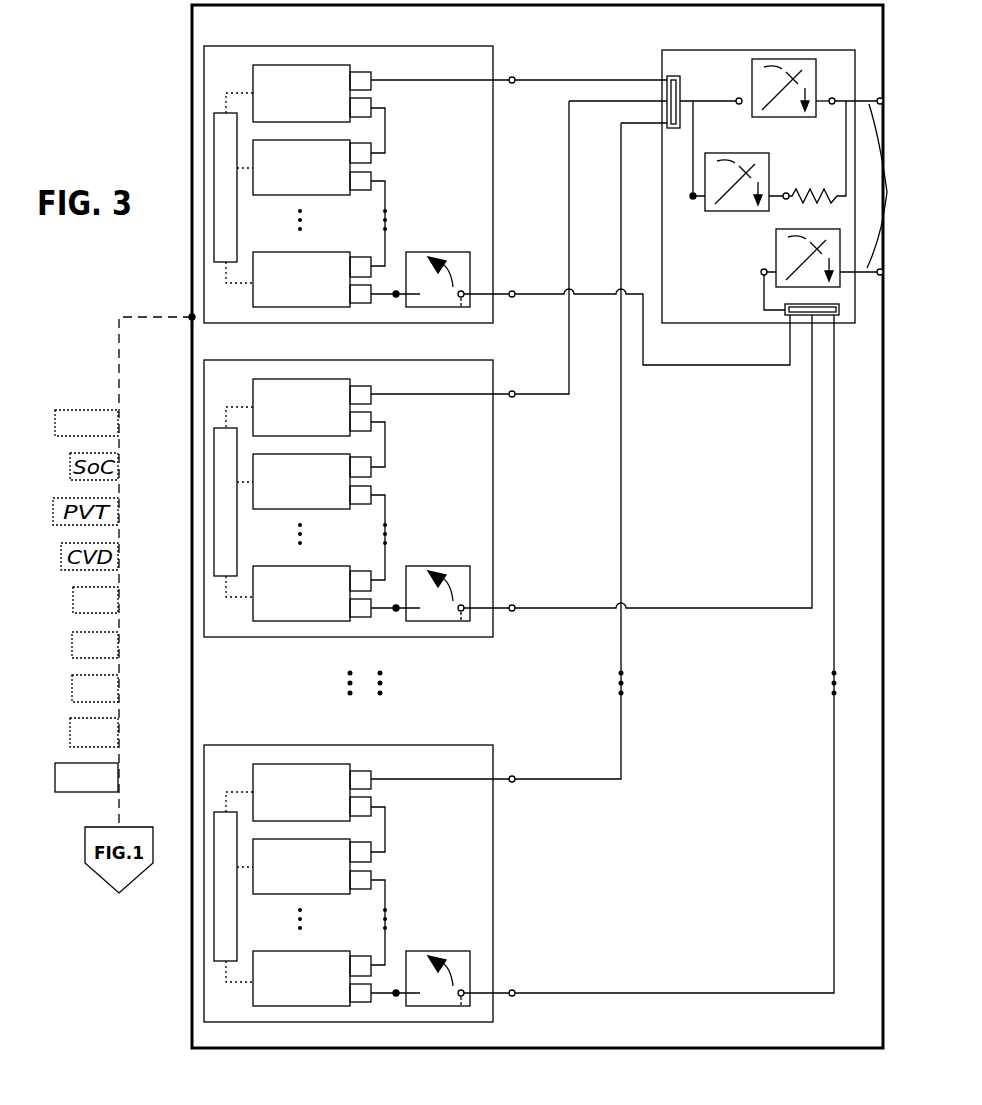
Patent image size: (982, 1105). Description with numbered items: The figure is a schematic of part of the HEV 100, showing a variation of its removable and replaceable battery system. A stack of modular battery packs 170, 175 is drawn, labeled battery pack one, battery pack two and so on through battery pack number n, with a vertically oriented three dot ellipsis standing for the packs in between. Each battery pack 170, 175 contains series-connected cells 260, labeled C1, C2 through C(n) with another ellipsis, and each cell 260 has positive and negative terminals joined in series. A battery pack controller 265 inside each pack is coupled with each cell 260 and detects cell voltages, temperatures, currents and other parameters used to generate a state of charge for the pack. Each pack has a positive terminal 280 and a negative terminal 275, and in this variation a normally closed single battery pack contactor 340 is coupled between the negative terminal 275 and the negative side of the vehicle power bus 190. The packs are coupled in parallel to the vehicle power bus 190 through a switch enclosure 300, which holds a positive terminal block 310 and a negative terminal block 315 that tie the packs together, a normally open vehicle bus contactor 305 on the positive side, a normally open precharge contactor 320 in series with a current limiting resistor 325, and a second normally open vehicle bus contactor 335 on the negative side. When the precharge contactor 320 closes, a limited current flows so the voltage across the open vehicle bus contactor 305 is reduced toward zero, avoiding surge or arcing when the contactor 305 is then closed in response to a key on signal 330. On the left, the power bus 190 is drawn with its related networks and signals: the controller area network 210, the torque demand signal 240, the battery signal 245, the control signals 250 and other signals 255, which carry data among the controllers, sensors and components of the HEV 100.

The hybrid electric vehicle 100 is at (872, 1036).
The battery pack 170 is at (340, 46).
The battery pack 175 is at (469, 512).
The vehicle power bus 190 is at (148, 317).
The controller area network 210 is at (72, 792).
The torque demand signal 240 is at (70, 722).
The battery signal 245 is at (72, 679).
The control signals 250 is at (72, 636).
The other signals 255 is at (73, 593).
The cells 260 is at (253, 93).
The battery pack controller 265 is at (214, 118).
The negative terminal 275 is at (513, 291).
The positive terminal 280 is at (513, 77).
The switch enclosure 300 is at (722, 50).
The vehicle bus contactor 305 is at (797, 59).
The positive terminal block 310 is at (667, 73).
The negative terminal block 315 is at (785, 310).
The precharge contactor 320 is at (710, 212).
The current limiting device 325 is at (795, 198).
The key on signal 330 is at (55, 416).
The second vehicle bus contactor 335 is at (776, 252).
The single battery pack contactor 340 is at (418, 253).